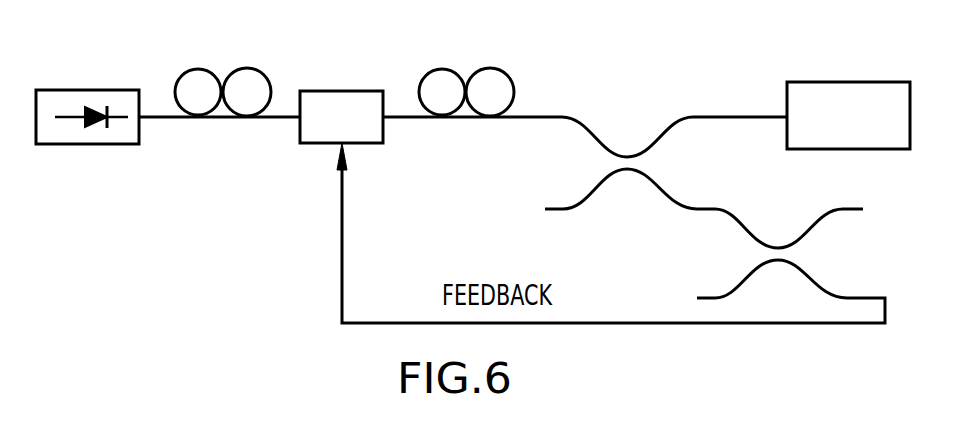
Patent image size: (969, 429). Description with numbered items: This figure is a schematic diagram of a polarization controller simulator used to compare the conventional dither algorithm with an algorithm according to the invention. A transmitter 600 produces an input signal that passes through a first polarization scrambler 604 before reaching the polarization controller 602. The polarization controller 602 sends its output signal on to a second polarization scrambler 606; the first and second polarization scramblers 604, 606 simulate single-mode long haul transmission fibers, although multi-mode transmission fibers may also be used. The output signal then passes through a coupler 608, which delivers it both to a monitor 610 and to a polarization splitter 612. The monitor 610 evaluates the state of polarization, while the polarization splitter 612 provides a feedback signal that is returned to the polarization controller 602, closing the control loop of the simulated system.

The transmitter 600 is at (96, 90).
The polarization controller 602 is at (344, 91).
The first polarization scrambler 604 is at (215, 69).
The second polarization scrambler 606 is at (459, 70).
The coupler 608 is at (636, 100).
The monitor 610 is at (848, 82).
The polarization splitter 612 is at (838, 256).